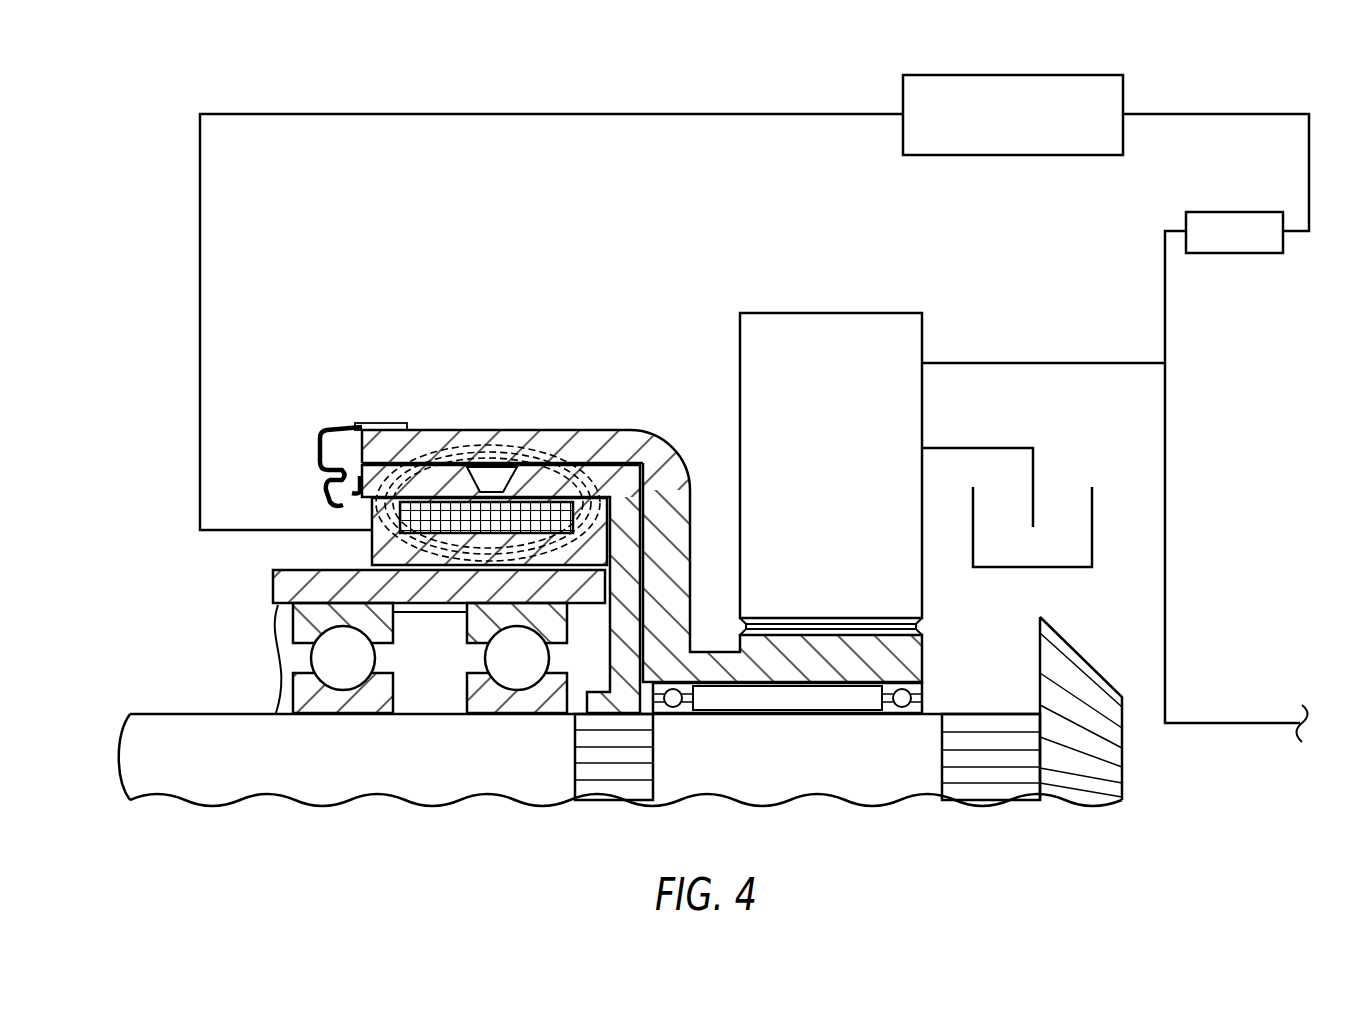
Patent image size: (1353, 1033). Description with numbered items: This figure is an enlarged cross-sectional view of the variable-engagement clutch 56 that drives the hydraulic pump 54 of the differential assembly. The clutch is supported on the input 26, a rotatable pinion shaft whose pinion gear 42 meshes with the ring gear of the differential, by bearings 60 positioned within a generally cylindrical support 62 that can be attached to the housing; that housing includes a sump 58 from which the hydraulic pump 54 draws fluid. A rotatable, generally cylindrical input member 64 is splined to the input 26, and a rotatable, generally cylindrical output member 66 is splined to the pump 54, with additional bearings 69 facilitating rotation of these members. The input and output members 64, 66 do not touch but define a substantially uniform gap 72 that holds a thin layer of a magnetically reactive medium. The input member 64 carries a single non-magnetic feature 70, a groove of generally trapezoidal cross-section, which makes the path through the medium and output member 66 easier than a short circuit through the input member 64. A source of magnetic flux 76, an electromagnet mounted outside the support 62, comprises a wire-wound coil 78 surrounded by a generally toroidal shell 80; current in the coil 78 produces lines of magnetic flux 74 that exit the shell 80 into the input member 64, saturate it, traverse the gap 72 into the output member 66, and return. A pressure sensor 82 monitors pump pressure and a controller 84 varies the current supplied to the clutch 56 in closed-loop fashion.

The input 26 is at (344, 775).
The pinion gear 42 is at (1080, 685).
The hydraulic pump 54 is at (819, 480).
The variable-engagement clutch 56 is at (512, 398).
The sump 58 is at (1072, 568).
The bearings 60 is at (473, 693).
The support 62 is at (283, 597).
The input member 64 is at (643, 560).
The output member 66 is at (670, 480).
The bearings 69 is at (917, 687).
The non-magnetic feature 70 is at (500, 478).
The gap 72 is at (602, 460).
The lines of magnetic flux 74 is at (533, 443).
The source of magnetic flux 76 is at (355, 553).
The wire-wound coil 78 is at (428, 517).
The toroidal shell 80 is at (372, 515).
The pressure sensor 82 is at (1212, 220).
The controller 84 is at (930, 82).